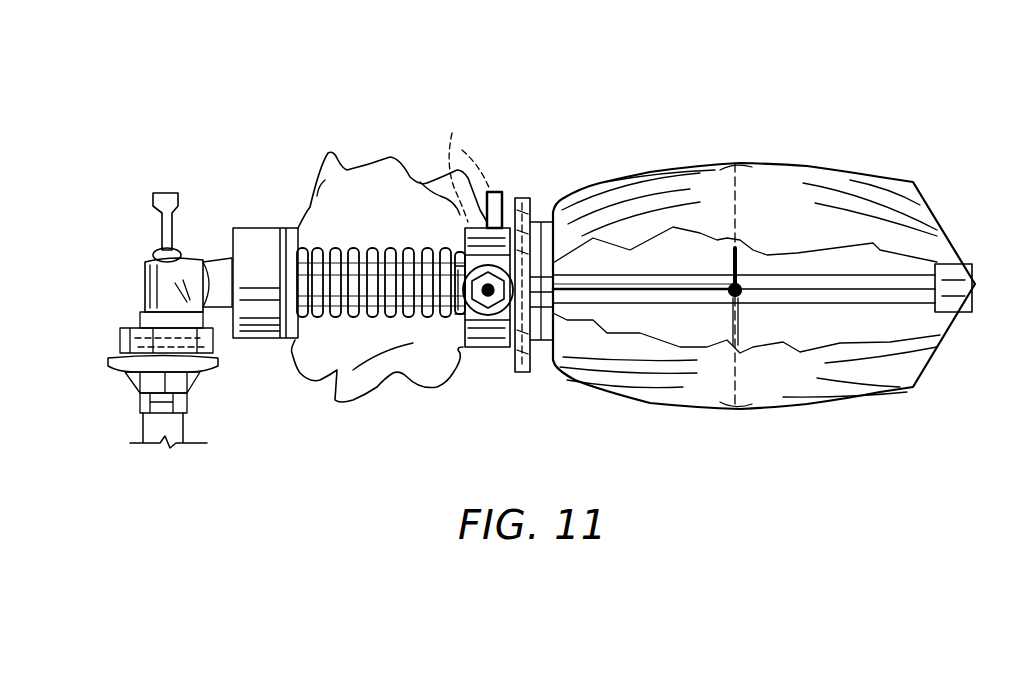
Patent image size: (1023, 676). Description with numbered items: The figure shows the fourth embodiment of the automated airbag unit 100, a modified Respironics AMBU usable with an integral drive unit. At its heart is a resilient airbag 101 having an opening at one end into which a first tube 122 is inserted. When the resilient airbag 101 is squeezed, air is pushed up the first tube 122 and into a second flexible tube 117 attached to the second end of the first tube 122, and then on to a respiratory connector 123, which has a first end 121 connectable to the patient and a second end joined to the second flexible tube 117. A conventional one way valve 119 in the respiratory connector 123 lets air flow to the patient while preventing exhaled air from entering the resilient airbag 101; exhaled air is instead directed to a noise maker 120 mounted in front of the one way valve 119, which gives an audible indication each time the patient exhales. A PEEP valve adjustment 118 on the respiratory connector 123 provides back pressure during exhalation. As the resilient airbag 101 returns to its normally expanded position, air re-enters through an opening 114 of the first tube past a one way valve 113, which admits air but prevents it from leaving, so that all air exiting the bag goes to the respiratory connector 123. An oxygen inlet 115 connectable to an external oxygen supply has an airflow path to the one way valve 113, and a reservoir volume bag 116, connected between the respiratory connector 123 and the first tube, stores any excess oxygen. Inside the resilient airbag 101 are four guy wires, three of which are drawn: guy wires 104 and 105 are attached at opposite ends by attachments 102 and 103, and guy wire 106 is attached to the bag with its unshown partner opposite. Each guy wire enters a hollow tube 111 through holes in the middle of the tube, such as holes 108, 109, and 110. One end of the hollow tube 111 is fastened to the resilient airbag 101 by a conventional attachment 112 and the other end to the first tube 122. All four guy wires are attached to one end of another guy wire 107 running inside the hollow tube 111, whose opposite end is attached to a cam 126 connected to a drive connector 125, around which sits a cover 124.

The automated airbag unit 100 is at (507, 110).
The resilient airbag 101 is at (818, 163).
The attachment 102 is at (768, 162).
The attachment 103 is at (770, 410).
The guy wire 104 is at (727, 260).
The guy wire 105 is at (733, 326).
The guy wire 106 is at (758, 328).
The guy wire 107 is at (590, 277).
The hole 108 is at (765, 272).
The hole 109 is at (778, 292).
The hole 110 is at (720, 306).
The hollow tube 111 is at (877, 293).
The attachment 112 is at (976, 262).
The one way valve 113 is at (532, 205).
The opening 114 is at (517, 365).
The oxygen inlet 115 is at (497, 192).
The reservoir volume bag 116 is at (397, 157).
The second flexible tube 117 is at (312, 247).
The PEEP valve adjustment 118 is at (177, 232).
The one way valve 119 is at (158, 347).
The noise maker 120 is at (118, 372).
The first end 121 is at (183, 405).
The first tube 122 is at (499, 374).
The respiratory connector 123 is at (128, 288).
The cover 124 is at (465, 255).
The drive connector 125 is at (455, 336).
The cam 126 is at (464, 164).